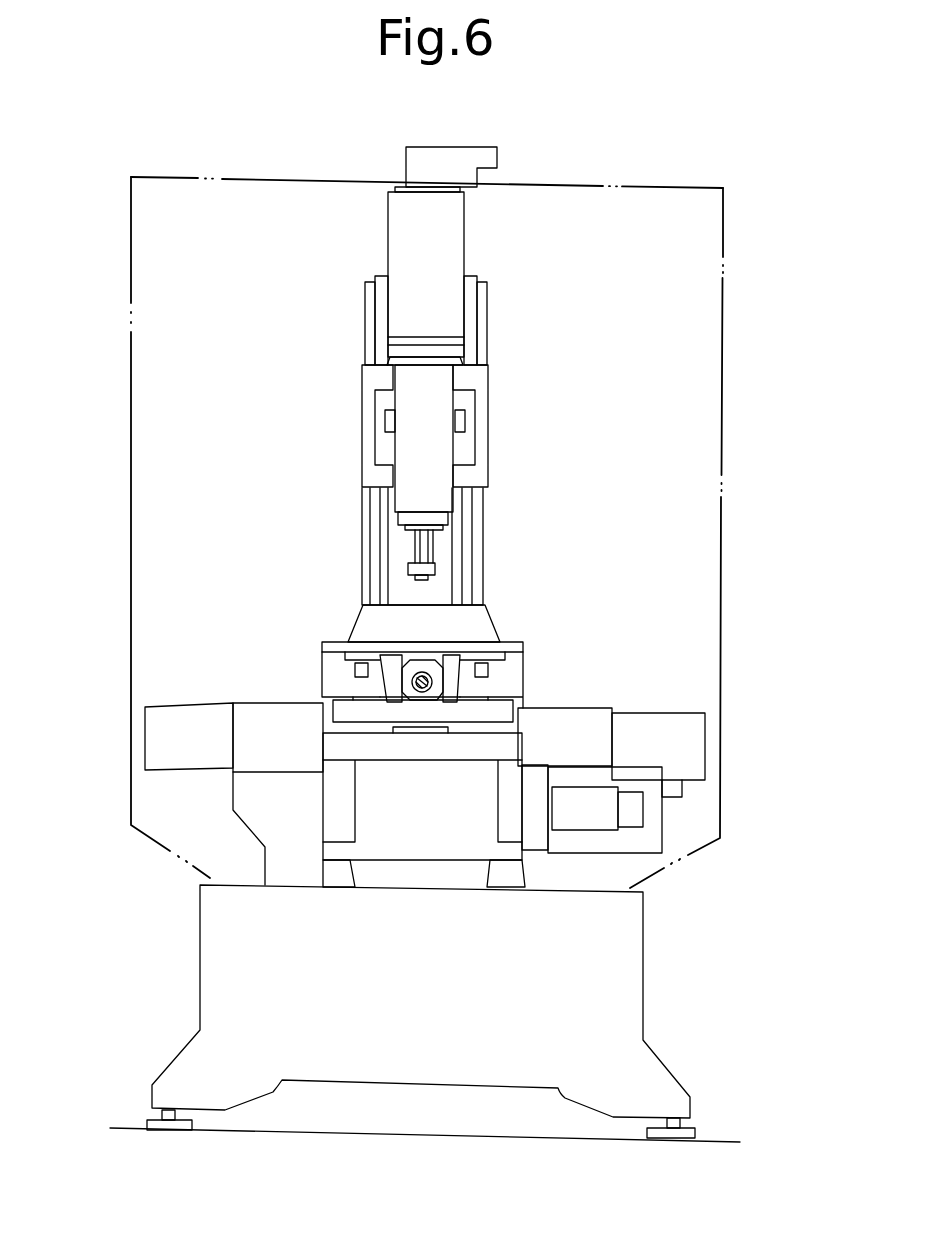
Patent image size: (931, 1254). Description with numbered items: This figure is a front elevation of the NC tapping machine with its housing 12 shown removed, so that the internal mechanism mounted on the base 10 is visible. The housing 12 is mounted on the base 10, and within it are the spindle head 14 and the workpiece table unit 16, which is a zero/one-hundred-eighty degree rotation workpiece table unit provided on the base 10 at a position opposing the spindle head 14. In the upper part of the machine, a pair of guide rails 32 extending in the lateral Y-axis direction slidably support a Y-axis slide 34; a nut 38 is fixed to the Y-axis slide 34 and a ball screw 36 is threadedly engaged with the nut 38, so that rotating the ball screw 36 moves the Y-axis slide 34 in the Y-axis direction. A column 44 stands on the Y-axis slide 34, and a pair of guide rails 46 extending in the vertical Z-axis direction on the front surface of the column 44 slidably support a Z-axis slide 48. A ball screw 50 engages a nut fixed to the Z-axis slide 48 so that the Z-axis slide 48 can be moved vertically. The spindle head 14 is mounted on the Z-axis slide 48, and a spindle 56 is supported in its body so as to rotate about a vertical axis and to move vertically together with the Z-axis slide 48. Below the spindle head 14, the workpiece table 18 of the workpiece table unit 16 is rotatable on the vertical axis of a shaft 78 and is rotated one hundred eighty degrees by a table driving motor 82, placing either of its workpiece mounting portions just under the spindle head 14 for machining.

The base 10 is at (610, 1008).
The housing 12 is at (722, 576).
The spindle head 14 is at (474, 472).
The workpiece table unit 16 is at (310, 795).
The workpiece table 18 is at (330, 745).
The guide rails 32 is at (352, 668).
The Y-axis slide 34 is at (520, 645).
The ball screw 36 is at (432, 684).
The nut 38 is at (425, 665).
The column 44 is at (482, 311).
The guide rails 46 is at (378, 546).
The Z-axis slide 48 is at (482, 408).
The ball screw 50 is at (425, 548).
The spindle 56 is at (442, 532).
The shaft 78 is at (448, 733).
The table driving motor 82 is at (598, 826).